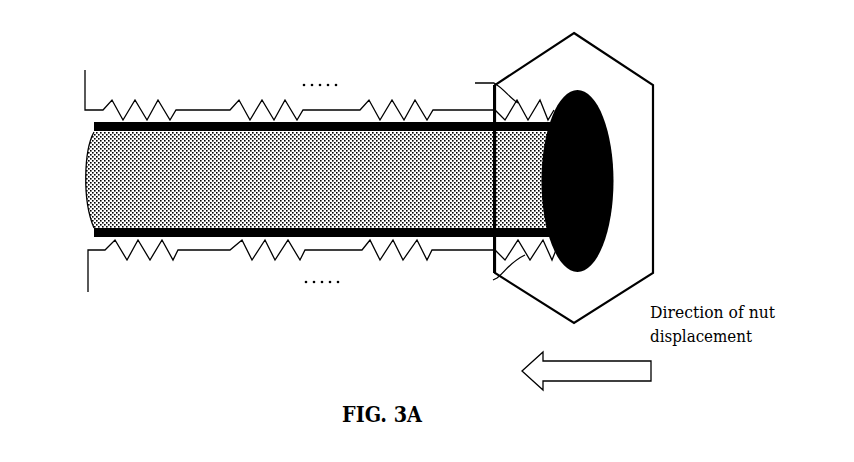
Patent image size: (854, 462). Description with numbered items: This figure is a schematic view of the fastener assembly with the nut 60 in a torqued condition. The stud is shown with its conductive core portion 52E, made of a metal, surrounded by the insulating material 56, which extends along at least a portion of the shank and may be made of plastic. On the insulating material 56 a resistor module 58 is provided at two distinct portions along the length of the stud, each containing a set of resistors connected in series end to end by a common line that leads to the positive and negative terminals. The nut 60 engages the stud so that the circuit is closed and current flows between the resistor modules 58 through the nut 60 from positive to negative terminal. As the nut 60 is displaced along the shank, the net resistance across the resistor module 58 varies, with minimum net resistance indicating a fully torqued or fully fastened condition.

The core portion 52E is at (100, 173).
The insulating material 56 is at (328, 122).
The resistor module 58 is at (192, 110).
The nut 60 is at (625, 86).